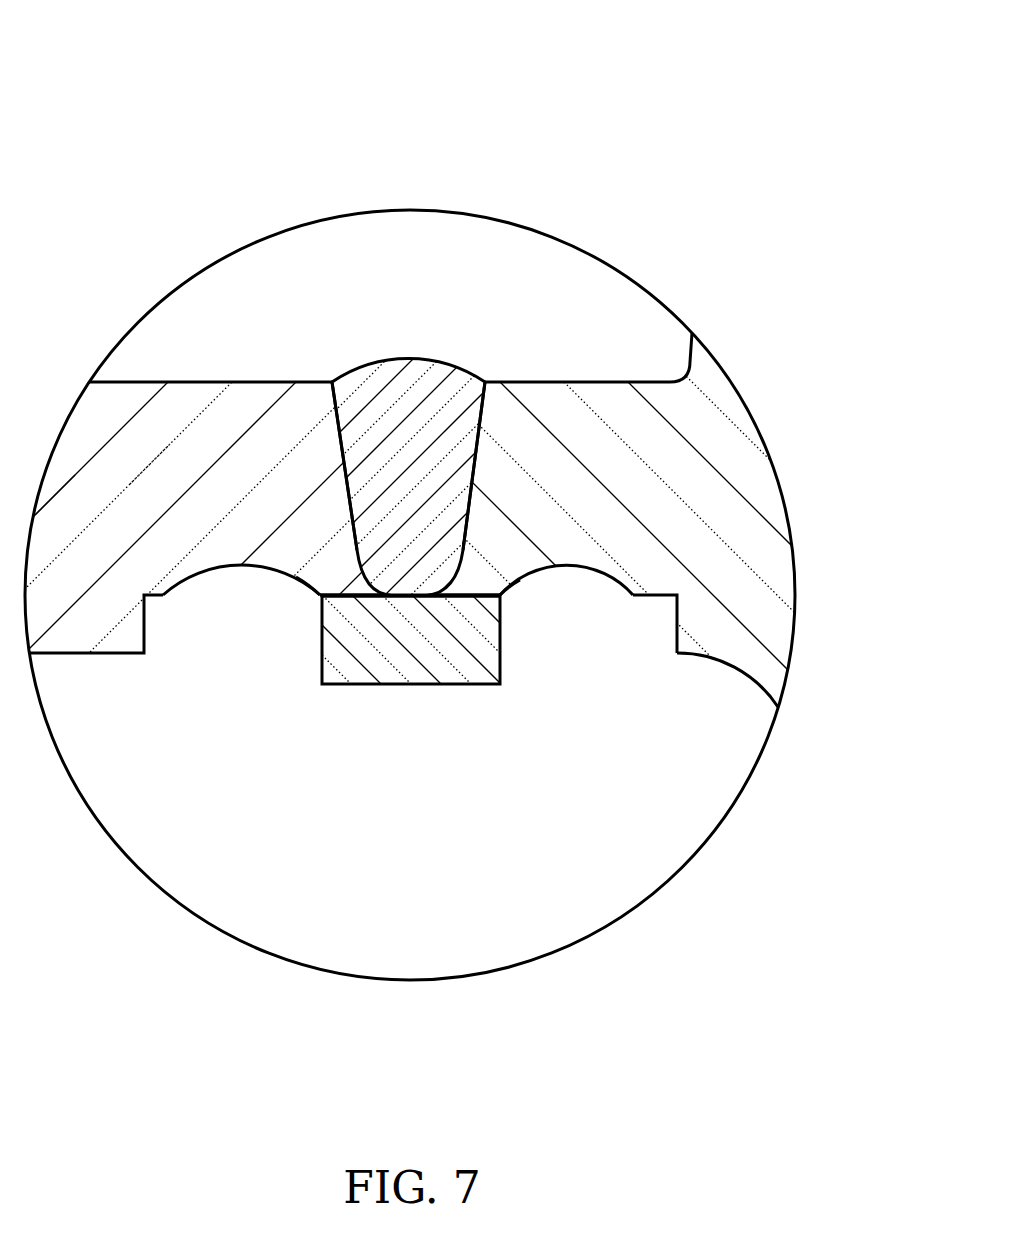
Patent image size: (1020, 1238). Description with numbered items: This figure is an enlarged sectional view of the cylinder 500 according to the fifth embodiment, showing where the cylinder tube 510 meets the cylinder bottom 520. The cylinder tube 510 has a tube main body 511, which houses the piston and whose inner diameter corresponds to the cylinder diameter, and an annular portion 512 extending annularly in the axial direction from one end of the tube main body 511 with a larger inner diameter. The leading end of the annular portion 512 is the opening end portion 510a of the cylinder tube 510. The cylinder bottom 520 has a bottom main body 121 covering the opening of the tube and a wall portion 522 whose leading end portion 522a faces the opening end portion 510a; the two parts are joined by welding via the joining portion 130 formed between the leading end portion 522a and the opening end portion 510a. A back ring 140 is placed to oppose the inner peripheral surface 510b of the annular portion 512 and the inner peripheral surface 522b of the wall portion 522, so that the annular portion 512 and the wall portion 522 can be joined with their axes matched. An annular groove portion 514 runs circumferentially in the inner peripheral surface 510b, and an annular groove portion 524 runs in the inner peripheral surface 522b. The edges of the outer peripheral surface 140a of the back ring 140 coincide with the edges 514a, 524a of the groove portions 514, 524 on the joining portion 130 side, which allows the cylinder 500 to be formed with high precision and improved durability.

The cylinder 500 is at (648, 323).
The cylinder tube 510 is at (127, 372).
The tube main body 511 is at (83, 478).
The annular portion 512 is at (174, 478).
The opening end portion 510a is at (340, 426).
The inner peripheral surface 510b is at (344, 596).
The annular groove portion 514 is at (182, 598).
The edge 514a is at (320, 597).
The cylinder bottom 520 is at (658, 372).
The wall portion 522 is at (588, 416).
The leading end portion 522a is at (482, 428).
The inner peripheral surface 522b is at (473, 596).
The annular groove portion 524 is at (621, 598).
The edge 524a is at (502, 596).
The joining portion 130 is at (401, 370).
The back ring 140 is at (435, 665).
The outer peripheral surface 140a is at (323, 594).
The bottom main body 121 is at (703, 630).